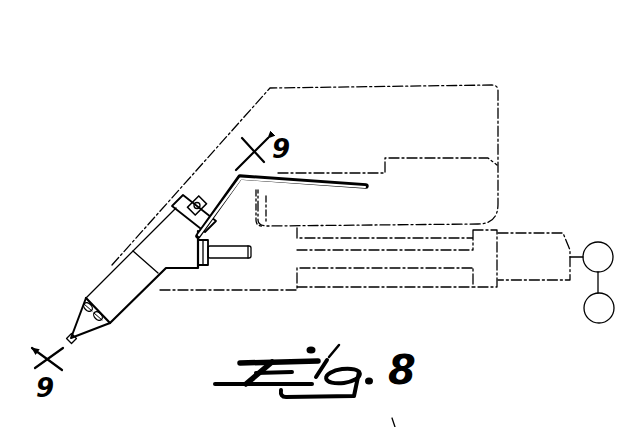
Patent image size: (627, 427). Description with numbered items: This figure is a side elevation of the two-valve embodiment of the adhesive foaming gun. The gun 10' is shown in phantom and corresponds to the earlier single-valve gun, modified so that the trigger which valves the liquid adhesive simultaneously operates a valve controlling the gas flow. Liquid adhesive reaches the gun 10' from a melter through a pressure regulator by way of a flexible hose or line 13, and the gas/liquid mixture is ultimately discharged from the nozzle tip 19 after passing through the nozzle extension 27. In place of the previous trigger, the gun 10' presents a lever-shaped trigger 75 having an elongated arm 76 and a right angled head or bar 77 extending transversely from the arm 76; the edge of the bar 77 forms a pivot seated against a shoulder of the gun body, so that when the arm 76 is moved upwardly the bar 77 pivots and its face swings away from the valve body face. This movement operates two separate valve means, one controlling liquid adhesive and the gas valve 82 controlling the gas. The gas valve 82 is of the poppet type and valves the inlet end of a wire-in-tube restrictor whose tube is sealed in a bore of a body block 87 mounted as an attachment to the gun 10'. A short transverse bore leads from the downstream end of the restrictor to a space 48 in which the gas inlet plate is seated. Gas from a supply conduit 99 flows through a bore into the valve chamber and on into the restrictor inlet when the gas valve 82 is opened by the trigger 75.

The gun 10' is at (305, 180).
The body block 87 is at (156, 243).
The nozzle extension 27 is at (74, 320).
The nozzle tip 19 is at (73, 344).
The right angled head or bar 77 is at (187, 194).
The gas valve 82 is at (199, 199).
The lever-shaped trigger 75 is at (309, 182).
The elongated arm 76 is at (230, 204).
The gas supply conduit 99 is at (232, 260).
The flexible hose or line 13 is at (537, 240).
The space 48 is at (406, 410).